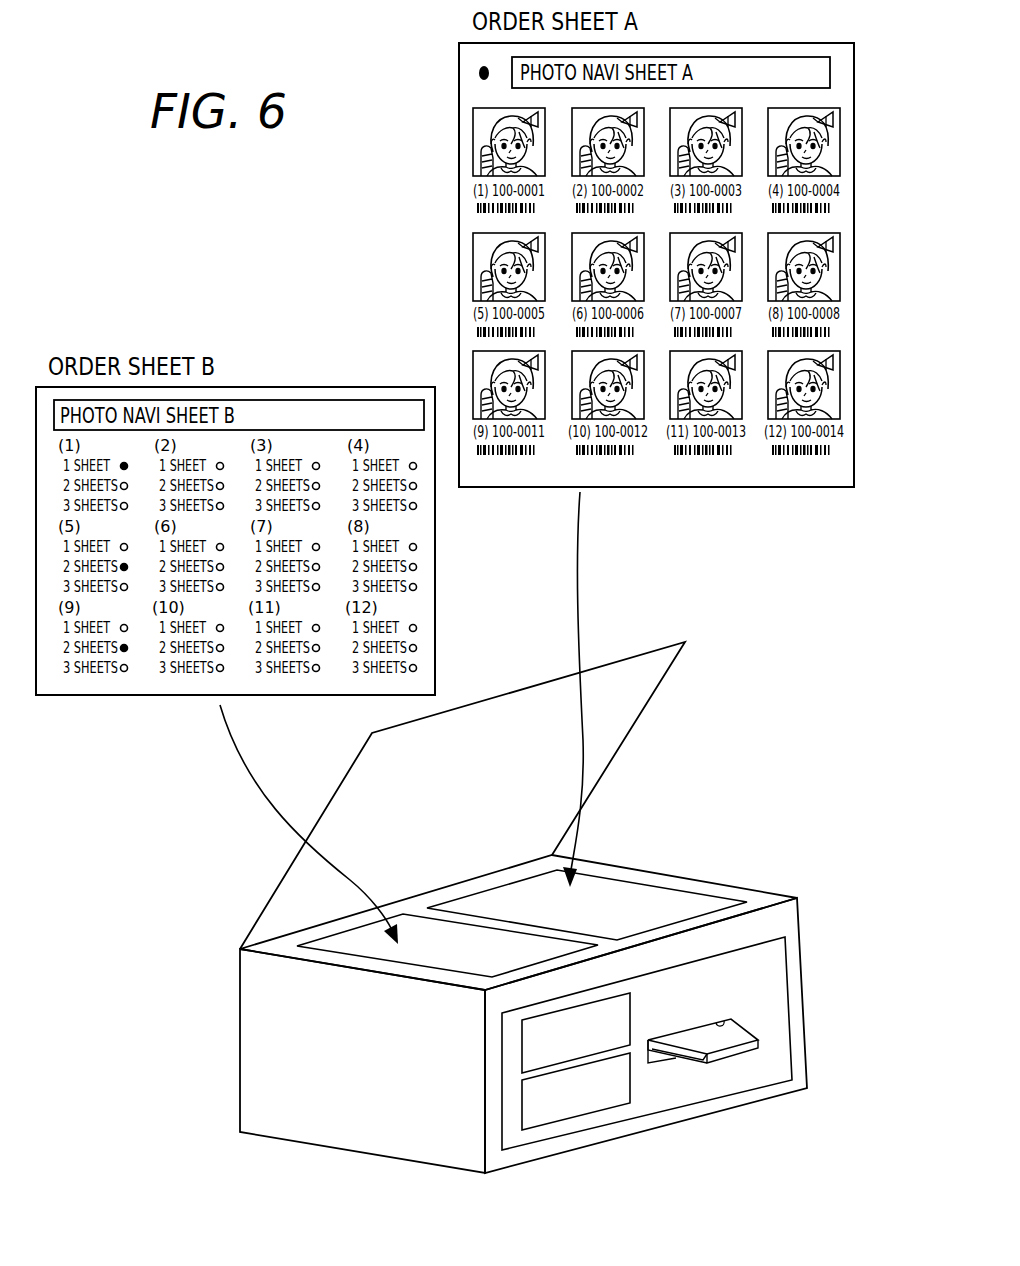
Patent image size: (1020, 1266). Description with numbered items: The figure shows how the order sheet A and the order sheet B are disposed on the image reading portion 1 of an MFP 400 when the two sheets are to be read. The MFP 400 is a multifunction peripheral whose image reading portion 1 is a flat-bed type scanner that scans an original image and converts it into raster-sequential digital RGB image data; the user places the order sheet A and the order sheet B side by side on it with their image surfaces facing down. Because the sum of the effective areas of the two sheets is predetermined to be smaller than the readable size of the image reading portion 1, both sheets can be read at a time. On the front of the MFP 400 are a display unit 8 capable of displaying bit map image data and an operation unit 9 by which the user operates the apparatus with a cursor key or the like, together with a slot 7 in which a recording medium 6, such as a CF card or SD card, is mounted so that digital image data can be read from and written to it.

The MFP 400 is at (516, 917).
The image reading portion 1 is at (283, 943).
The recording medium 6 is at (722, 1042).
The slot 7 is at (730, 1018).
The display unit 8 is at (537, 1047).
The operation unit 9 is at (582, 1100).